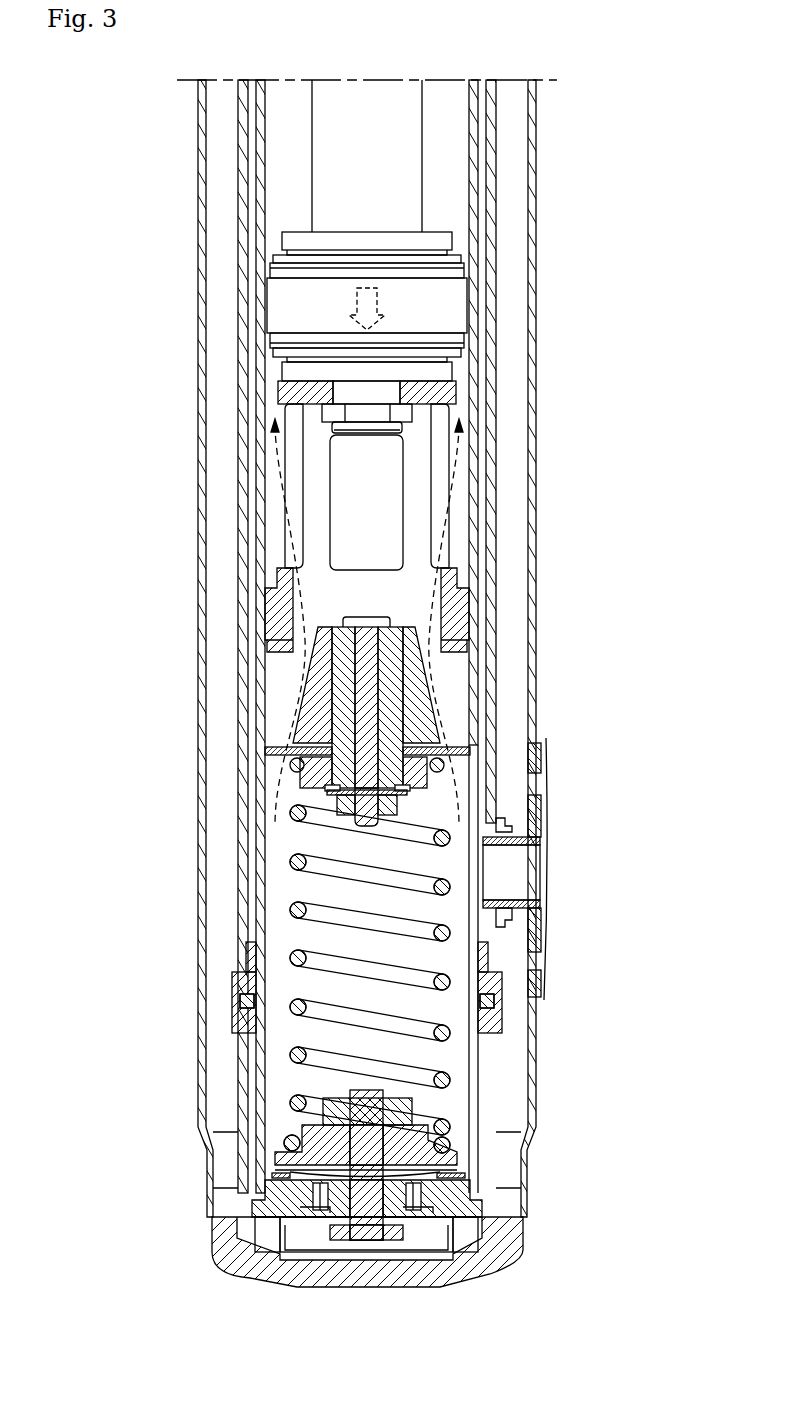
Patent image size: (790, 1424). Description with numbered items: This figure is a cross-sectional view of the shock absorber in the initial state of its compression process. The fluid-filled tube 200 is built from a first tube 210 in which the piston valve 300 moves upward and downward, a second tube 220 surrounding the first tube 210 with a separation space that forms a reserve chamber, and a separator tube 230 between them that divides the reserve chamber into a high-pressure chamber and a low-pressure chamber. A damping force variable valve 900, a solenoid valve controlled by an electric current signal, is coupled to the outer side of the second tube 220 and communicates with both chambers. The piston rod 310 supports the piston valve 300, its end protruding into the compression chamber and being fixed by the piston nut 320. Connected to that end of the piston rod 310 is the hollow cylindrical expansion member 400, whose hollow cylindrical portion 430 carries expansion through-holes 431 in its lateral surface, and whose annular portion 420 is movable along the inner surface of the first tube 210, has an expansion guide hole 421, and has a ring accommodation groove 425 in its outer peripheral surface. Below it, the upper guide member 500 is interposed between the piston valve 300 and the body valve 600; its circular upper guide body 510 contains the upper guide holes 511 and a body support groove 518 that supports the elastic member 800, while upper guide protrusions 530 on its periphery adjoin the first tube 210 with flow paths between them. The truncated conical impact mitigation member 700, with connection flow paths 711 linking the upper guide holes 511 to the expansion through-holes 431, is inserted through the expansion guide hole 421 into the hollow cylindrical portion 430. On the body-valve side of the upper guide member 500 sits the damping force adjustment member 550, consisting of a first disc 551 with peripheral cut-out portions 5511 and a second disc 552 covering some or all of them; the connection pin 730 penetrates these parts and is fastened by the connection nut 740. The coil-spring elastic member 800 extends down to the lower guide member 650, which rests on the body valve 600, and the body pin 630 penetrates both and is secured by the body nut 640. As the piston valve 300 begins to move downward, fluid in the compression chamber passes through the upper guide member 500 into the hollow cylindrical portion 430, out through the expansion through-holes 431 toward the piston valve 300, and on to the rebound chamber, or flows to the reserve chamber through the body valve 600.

The tube 200 is at (446, 648).
The first tube 210 is at (477, 168).
The second tube 220 is at (536, 223).
The separator tube 230 is at (497, 197).
The piston valve 300 is at (289, 303).
The piston rod 310 is at (322, 163).
The piston nut 320 is at (324, 403).
The hollow cylindrical expansion member 400 is at (338, 614).
The annular portion 420 is at (294, 599).
The expansion guide hole 421 is at (267, 638).
The ring accommodation groove 425 is at (280, 600).
The hollow cylindrical portion 430 is at (370, 487).
The expansion through-holes 431 is at (366, 472).
The upper guide member 500 is at (359, 789).
The upper guide body 510 is at (300, 768).
The upper guide holes 511 is at (320, 783).
The body support groove 518 is at (432, 760).
The upper guide protrusions 530 is at (340, 746).
The damping force adjustment member 550 is at (540, 862).
The first disc 551 is at (415, 797).
The second disc 552 is at (388, 828).
The cut-out portions 5511 is at (330, 823).
The body valve 600 is at (463, 1197).
The body pin 630 is at (401, 1233).
The body nut 640 is at (411, 1103).
The lower guide member 650 is at (431, 1143).
The impact mitigation member 700 is at (453, 726).
The connection flow paths 711 is at (405, 662).
The connection pin 730 is at (381, 616).
The connection nut 740 is at (341, 818).
The elastic member 800 is at (294, 1003).
The damping force variable valve 900 is at (541, 756).